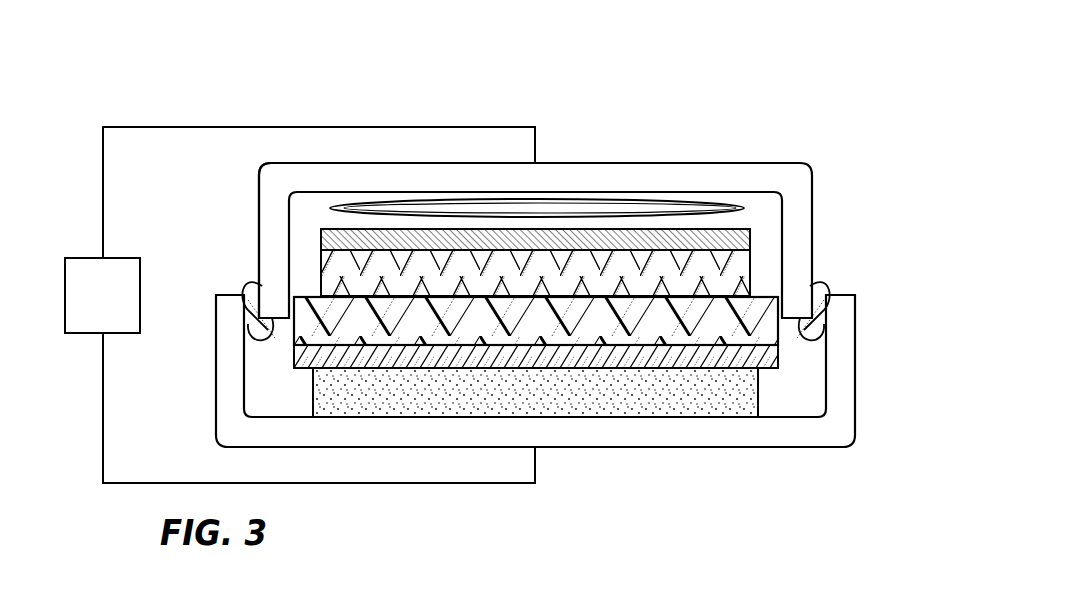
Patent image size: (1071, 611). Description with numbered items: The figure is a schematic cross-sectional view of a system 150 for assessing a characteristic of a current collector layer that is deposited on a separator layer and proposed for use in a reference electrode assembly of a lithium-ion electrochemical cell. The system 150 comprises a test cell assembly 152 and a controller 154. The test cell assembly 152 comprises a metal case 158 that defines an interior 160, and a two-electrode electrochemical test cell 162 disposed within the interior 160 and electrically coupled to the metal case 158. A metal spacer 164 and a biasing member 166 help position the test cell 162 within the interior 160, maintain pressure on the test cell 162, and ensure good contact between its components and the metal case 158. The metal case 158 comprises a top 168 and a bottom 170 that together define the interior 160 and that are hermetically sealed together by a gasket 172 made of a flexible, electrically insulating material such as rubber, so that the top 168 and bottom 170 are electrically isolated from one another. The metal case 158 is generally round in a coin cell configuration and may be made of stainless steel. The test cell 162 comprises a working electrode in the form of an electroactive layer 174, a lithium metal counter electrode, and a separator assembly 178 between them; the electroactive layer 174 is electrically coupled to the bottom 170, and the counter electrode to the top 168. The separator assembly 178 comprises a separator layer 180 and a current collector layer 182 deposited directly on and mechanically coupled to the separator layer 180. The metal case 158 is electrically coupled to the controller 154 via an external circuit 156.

The system 150 is at (790, 127).
The test cell assembly 152 is at (634, 163).
The controller 154 is at (102, 295).
The external circuit 156 is at (385, 127).
The metal case 158 is at (259, 188).
The interior 160 is at (309, 215).
The two-electrode electrochemical test cell 162 is at (314, 287).
The metal spacer 164 is at (750, 243).
The biasing member 166 is at (745, 208).
The top 168 is at (732, 163).
The bottom 170 is at (805, 447).
The gasket 172 is at (827, 277).
The electroactive layer 174 is at (702, 417).
The separator assembly 178 is at (784, 348).
The separator layer 180 is at (294, 340).
The current collector layer 182 is at (568, 372).